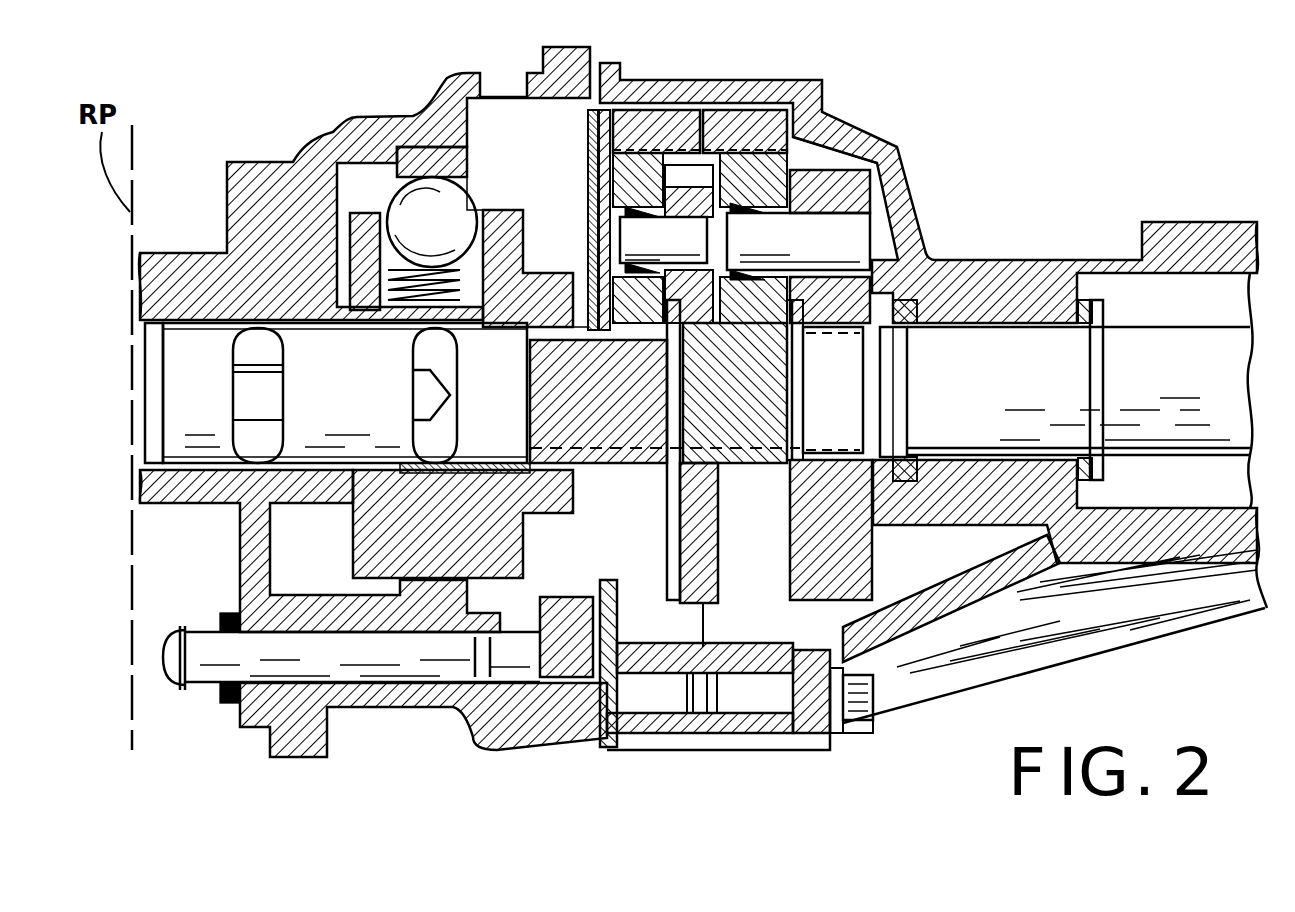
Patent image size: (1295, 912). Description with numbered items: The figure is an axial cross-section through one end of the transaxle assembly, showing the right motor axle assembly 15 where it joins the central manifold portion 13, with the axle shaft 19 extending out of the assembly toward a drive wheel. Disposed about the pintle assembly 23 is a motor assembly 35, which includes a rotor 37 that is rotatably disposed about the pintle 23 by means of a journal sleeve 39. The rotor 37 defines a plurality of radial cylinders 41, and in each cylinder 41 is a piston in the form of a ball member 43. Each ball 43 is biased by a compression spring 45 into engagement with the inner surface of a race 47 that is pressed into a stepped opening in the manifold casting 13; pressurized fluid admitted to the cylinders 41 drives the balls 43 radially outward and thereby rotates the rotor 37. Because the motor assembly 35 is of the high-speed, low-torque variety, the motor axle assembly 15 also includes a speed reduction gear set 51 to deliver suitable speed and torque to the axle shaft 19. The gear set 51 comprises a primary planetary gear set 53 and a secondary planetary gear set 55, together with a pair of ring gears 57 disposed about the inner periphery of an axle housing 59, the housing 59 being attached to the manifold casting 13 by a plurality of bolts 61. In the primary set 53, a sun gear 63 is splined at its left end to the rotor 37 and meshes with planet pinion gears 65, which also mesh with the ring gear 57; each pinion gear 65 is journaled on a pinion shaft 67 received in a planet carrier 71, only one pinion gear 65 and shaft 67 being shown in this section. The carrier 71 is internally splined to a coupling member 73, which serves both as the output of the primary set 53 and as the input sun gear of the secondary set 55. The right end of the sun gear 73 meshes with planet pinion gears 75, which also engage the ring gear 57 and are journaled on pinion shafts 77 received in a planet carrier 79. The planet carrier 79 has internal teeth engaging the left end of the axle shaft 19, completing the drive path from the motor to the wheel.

The central manifold portion 13 is at (265, 190).
The right motor axle assembly 15 is at (442, 82).
The axle shaft 19 is at (1162, 357).
The pintle assembly 23 is at (345, 393).
The motor assembly 35 is at (520, 200).
The rotor 37 is at (380, 533).
The journal sleeve 39 is at (417, 478).
The radial cylinder 41 is at (387, 263).
The ball member 43 is at (413, 213).
The compression spring 45 is at (522, 243).
The race 47 is at (413, 155).
The speed reduction gear set 51 is at (827, 150).
The primary planetary gear set 53 is at (645, 712).
The secondary planetary gear set 55 is at (755, 710).
The ring gear 57 is at (720, 663).
The axle housing 59 is at (955, 597).
The bolt 61 is at (857, 733).
The sun gear 63 is at (665, 401).
The planet pinion gear 65 is at (647, 190).
The pinion shaft 67 is at (663, 240).
The planet carrier 71 is at (723, 533).
The coupling member 73 is at (768, 410).
The planet pinion gear 75 is at (765, 183).
The pinion shaft 77 is at (798, 241).
The planet carrier 79 is at (855, 195).